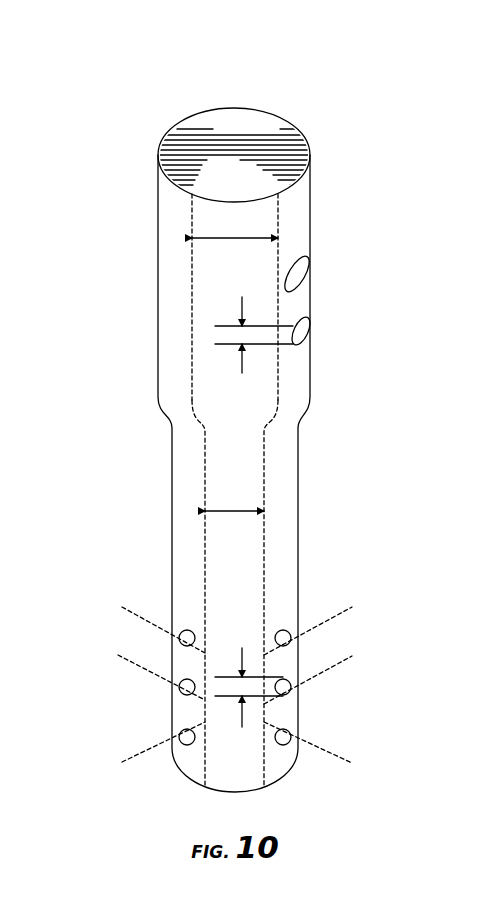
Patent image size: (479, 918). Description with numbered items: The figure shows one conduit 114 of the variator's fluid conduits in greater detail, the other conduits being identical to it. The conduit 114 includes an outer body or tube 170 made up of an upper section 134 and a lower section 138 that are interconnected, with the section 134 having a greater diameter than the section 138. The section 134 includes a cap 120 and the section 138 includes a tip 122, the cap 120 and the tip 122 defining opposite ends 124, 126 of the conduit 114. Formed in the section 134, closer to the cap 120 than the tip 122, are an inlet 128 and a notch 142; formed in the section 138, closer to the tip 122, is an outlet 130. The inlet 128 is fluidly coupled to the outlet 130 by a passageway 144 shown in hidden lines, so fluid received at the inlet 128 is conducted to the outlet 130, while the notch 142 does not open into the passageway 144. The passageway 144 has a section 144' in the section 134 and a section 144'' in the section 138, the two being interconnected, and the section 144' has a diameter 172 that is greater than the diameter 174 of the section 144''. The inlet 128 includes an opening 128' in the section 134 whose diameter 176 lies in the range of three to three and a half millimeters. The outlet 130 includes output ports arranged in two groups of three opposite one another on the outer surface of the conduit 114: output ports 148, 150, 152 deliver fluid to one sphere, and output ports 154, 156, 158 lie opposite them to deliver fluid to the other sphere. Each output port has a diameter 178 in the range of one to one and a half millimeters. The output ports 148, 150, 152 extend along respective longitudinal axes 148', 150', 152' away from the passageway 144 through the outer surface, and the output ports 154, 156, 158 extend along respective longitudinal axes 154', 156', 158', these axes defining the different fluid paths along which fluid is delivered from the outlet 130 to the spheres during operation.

The conduit 114 is at (295, 96).
The cap 120 is at (157, 165).
The tip 122 is at (188, 782).
The end 124 is at (209, 128).
The end 126 is at (263, 785).
The inlet 128 is at (346, 323).
The opening 128' is at (360, 351).
The outlet 130 is at (342, 636).
The section 134 is at (303, 295).
The section 138 is at (287, 533).
The notch 142 is at (298, 273).
The passageway 144 is at (316, 587).
The section 144' is at (148, 295).
The section 144'' is at (326, 448).
The output port 148 is at (160, 607).
The longitudinal axis 148' is at (131, 630).
The output port 150 is at (145, 694).
The longitudinal axis 150' is at (127, 677).
The output port 152 is at (138, 739).
The longitudinal axis 152' is at (137, 757).
The output port 154 is at (313, 601).
The longitudinal axis 154' is at (347, 606).
The output port 156 is at (305, 667).
The longitudinal axis 156' is at (350, 679).
The output port 158 is at (323, 726).
The longitudinal axis 158' is at (347, 743).
The tube 170 is at (302, 197).
The diameter 172 is at (243, 237).
The diameter 174 is at (242, 510).
The diameter 176 is at (240, 375).
The diameter 178 is at (240, 728).